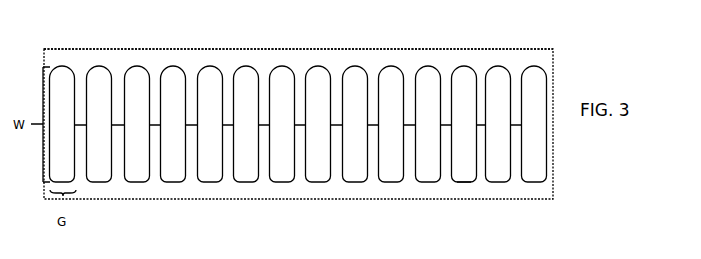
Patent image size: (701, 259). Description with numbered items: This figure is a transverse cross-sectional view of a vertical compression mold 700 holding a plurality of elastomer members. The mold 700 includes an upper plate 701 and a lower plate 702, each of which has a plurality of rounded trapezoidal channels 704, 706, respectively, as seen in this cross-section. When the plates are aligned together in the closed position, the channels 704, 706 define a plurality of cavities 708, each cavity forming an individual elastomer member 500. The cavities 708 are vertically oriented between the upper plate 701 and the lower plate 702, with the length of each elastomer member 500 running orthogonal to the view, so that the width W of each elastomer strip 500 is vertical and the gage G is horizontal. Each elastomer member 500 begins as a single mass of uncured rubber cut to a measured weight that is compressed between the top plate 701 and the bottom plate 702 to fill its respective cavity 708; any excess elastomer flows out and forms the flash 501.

The elastomer member 500 is at (166, 68).
The flash 501 is at (238, 82).
The vertical compression mold 700 is at (163, 200).
The upper plate 701 is at (335, 63).
The lower plate 702 is at (375, 183).
The rounded trapezoidal channels 704 is at (463, 68).
The rounded trapezoidal channels 706 is at (461, 183).
The cavities 708 is at (500, 95).